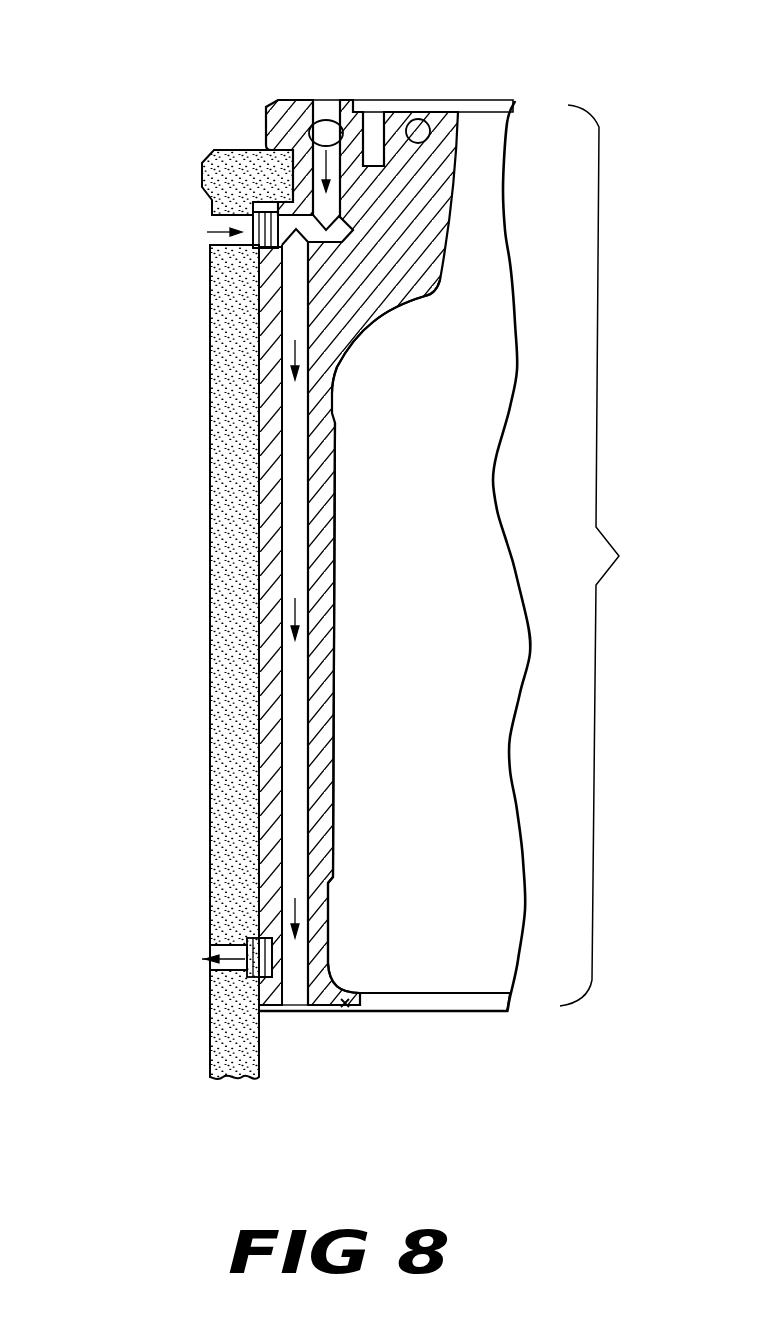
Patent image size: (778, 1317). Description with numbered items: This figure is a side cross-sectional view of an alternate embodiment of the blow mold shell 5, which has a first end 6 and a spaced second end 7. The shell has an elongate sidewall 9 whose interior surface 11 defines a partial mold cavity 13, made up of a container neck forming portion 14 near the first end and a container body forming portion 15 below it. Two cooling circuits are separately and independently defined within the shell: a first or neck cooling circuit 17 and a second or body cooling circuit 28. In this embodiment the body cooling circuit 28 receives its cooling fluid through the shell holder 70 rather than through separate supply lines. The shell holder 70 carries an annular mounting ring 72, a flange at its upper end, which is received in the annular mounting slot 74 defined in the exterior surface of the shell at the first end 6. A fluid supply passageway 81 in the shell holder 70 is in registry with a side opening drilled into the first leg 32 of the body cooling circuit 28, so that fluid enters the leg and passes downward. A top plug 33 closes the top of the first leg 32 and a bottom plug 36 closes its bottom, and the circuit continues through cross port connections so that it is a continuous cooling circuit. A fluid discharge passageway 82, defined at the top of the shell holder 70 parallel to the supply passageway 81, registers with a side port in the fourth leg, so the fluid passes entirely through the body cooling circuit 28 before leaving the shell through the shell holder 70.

The blow mold shell 5 is at (278, 101).
The first end 6 is at (302, 100).
The top plug 33 is at (324, 100).
The neck cooling circuit 17 is at (420, 128).
The mounting slot 74 is at (268, 175).
The mounting ring 72 is at (202, 177).
The fluid supply passageway 81 is at (220, 238).
The fluid discharge passageway 82 is at (262, 594).
The shell holder 70 is at (235, 383).
The body cooling circuit 28 is at (292, 510).
The container neck forming portion 14 is at (435, 288).
The sidewall 9 is at (343, 303).
The first leg 32 is at (302, 648).
The interior surface 11 is at (333, 702).
The container body forming portion 15 is at (327, 925).
The partial mold cavity 13 is at (589, 556).
The second end 7 is at (352, 1011).
The bottom plug 36 is at (290, 1011).